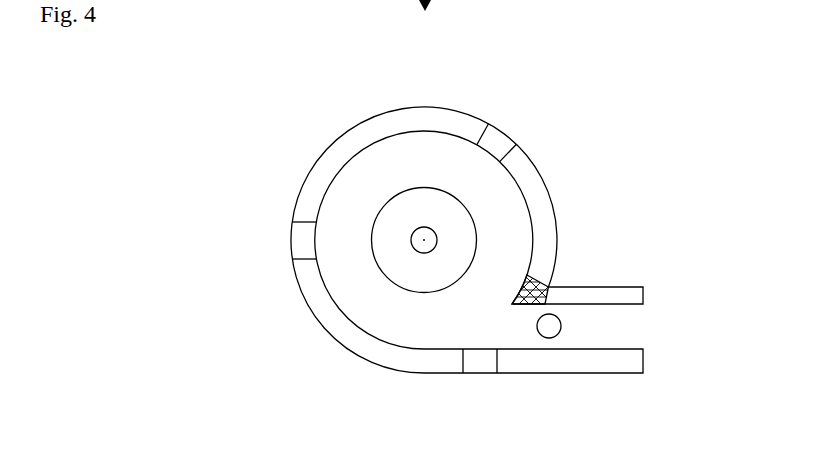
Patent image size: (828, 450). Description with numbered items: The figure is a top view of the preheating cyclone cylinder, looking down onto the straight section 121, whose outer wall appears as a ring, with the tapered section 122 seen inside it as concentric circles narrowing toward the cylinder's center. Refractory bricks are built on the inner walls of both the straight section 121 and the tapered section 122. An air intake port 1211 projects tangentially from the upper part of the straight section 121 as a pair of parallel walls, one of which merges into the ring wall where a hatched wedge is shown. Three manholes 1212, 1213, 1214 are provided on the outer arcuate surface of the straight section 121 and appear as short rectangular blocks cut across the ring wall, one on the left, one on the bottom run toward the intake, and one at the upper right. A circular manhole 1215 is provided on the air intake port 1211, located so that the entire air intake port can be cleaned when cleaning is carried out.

The straight section 121 is at (357, 142).
The tapered section 122 is at (348, 207).
The air intake port 1211 is at (625, 322).
The manhole 1212 is at (300, 250).
The manhole 1213 is at (475, 363).
The manhole 1214 is at (500, 145).
The circular manhole 1215 is at (555, 332).